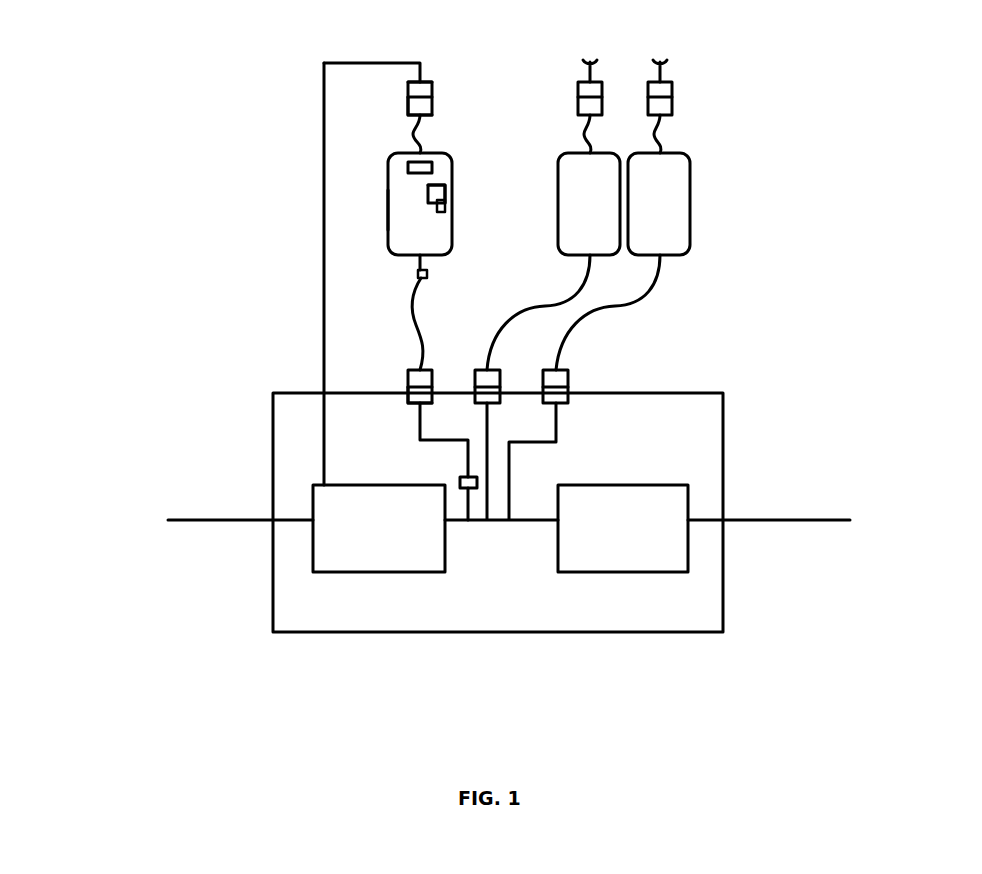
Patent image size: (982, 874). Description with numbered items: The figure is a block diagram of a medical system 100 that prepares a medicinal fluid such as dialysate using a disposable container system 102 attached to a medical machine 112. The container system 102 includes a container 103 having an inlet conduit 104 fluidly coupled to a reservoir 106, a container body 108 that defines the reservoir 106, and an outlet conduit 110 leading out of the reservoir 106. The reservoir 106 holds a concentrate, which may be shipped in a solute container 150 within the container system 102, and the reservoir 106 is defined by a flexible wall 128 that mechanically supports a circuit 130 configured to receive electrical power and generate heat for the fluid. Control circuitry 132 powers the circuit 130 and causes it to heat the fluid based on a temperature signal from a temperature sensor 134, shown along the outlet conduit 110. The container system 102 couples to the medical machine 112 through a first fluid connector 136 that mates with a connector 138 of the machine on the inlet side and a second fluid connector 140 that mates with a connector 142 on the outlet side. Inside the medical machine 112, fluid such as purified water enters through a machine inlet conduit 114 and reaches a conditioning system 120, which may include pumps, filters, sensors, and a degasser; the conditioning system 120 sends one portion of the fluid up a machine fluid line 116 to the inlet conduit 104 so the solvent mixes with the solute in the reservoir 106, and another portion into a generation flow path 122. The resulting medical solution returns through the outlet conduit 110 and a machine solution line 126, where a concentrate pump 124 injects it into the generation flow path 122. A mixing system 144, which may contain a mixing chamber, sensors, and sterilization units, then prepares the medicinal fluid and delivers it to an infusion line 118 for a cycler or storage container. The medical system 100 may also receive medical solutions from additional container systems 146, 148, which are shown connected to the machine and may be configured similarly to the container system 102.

The medical system 100 is at (135, 281).
The container system 102 is at (450, 56).
The container 103 is at (456, 148).
The inlet conduit 104 is at (420, 128).
The reservoir 106 is at (408, 222).
The container body 108 is at (388, 217).
The outlet conduit 110 is at (418, 333).
The medical machine 112 is at (688, 425).
The machine inlet conduit 114 is at (230, 520).
The machine fluid line 116 is at (324, 215).
The infusion line 118 is at (777, 520).
The conditioning system 120 is at (379, 528).
The generation flow path 122 is at (497, 557).
The concentrate pump 124 is at (462, 477).
The machine solution line 126 is at (418, 423).
The wall 128 is at (447, 185).
The circuit 130 is at (437, 192).
The control circuitry 132 is at (445, 207).
The temperature sensor 134 is at (428, 273).
The first fluid connector 136 is at (408, 110).
The connector 138 is at (408, 88).
The second fluid connector 140 is at (415, 378).
The connector 142 is at (418, 395).
The mixing system 144 is at (623, 528).
The container system 146 is at (617, 142).
The container system 148 is at (687, 142).
The solute container 150 is at (408, 172).